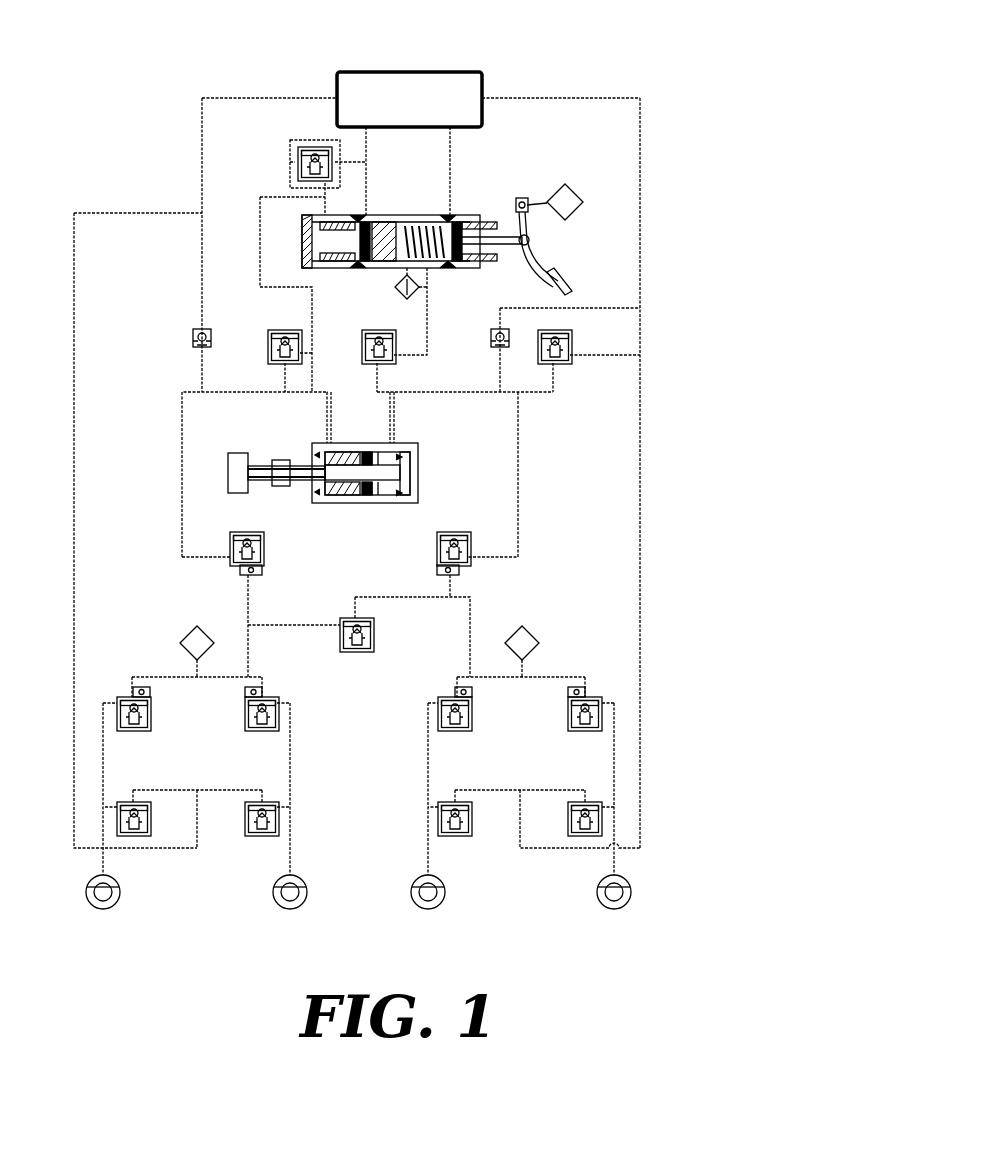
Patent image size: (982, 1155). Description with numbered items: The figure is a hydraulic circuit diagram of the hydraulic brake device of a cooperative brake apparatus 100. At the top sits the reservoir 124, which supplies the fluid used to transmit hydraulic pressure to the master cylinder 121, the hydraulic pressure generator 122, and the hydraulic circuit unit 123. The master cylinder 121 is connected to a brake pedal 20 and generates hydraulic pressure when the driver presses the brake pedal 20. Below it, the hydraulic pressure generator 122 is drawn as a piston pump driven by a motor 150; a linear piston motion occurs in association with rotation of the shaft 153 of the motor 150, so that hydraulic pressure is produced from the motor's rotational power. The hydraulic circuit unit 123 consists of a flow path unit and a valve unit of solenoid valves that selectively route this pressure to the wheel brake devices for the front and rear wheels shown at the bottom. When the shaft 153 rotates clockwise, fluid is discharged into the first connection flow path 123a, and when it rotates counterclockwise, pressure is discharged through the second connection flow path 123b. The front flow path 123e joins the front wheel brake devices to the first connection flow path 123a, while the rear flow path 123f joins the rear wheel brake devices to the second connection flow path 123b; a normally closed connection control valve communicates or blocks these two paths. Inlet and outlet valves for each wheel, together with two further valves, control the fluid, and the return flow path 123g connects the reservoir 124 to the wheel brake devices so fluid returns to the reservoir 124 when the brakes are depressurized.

The cooperative brake apparatus 100 is at (108, 42).
The reservoir 124 is at (458, 72).
The master cylinder 121 is at (410, 214).
The brake pedal 20 is at (572, 278).
The hydraulic circuit unit 123 is at (662, 398).
The first connection flow path 123a is at (75, 387).
The second connection flow path 123b is at (182, 477).
The return flow path 123g is at (640, 475).
The rear flow path 123f is at (248, 640).
The front flow path 123e is at (470, 647).
The motor 150 is at (245, 453).
The shaft 153 is at (296, 490).
The hydraulic pressure generator 122 is at (366, 515).